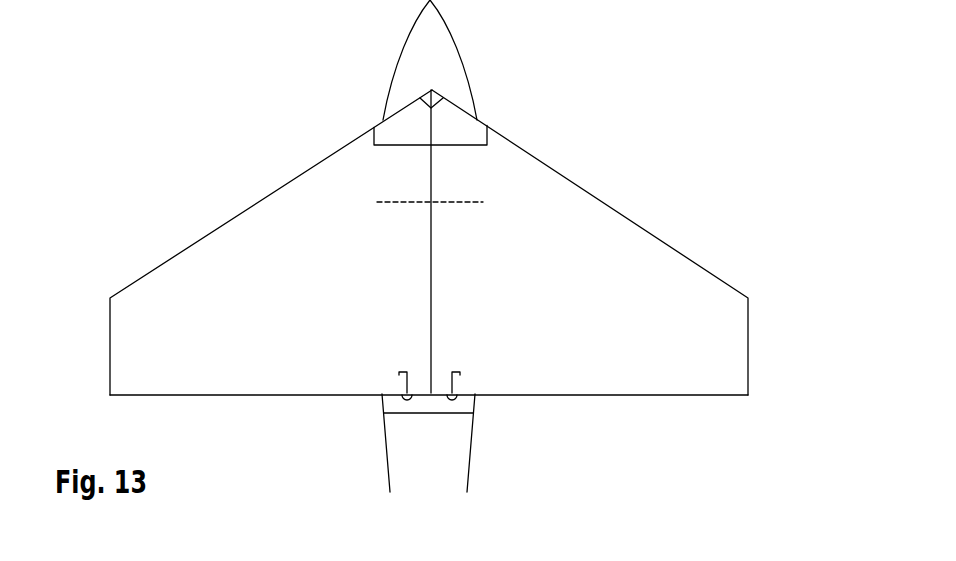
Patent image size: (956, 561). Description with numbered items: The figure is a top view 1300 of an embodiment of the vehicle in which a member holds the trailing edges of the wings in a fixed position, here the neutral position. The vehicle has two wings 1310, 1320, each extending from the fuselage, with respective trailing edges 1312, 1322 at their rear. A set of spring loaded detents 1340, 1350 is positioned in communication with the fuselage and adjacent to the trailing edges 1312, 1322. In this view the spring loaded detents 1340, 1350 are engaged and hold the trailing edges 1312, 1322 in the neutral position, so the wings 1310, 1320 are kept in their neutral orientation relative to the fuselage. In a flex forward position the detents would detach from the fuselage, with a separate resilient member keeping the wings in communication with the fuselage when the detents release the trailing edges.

The top view 1300 is at (429, 258).
The wing 1310 is at (212, 272).
The wing 1320 is at (688, 290).
The trailing edge 1312 is at (360, 394).
The trailing edge 1322 is at (492, 394).
The spring loaded detent 1340 is at (404, 383).
The spring loaded detent 1350 is at (456, 383).